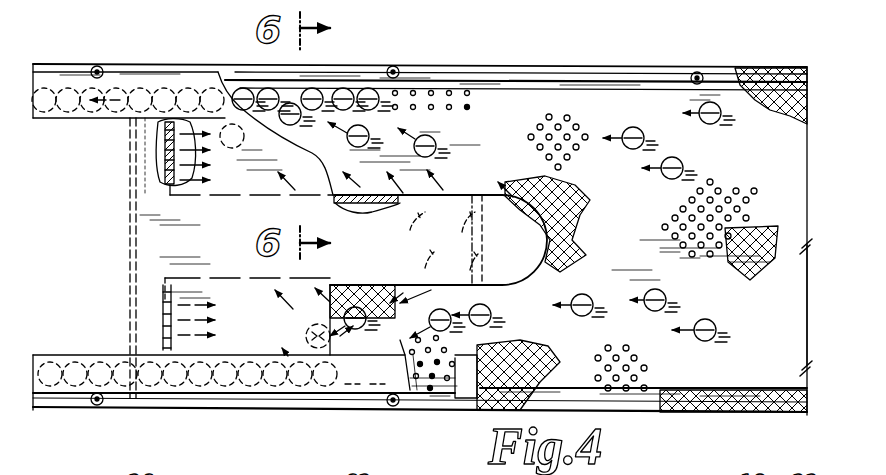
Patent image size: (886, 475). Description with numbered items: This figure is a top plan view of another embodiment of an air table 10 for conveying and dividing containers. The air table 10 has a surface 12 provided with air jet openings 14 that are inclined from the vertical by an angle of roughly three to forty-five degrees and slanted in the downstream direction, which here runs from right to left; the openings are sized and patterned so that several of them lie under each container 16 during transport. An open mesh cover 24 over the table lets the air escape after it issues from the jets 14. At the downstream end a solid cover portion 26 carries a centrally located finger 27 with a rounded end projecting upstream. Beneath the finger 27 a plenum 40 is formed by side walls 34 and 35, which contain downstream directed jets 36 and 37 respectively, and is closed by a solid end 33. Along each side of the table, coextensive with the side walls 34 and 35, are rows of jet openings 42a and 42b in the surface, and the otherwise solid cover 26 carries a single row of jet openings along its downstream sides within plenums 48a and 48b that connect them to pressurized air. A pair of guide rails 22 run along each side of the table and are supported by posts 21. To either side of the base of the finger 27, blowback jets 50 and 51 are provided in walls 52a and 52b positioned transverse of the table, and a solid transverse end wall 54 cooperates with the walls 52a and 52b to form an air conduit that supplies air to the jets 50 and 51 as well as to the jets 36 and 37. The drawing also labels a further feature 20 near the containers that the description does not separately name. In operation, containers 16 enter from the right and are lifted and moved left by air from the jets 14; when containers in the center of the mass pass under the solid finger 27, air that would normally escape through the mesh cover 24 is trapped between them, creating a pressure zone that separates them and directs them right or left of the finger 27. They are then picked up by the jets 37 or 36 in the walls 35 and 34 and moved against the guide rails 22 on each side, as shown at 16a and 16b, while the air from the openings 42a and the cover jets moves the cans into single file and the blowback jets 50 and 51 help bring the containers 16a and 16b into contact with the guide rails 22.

The air table 10 is at (665, 66).
The surface 12 is at (778, 334).
The air jet openings 14 is at (738, 186).
The container 16 is at (690, 142).
The container against first guide rail 16a is at (228, 148).
The container against second guide rail 16b is at (304, 334).
The coated granules 20 is at (368, 213).
The posts 21 is at (704, 78).
The guide rails 22 is at (547, 82).
The open mesh cover 24 is at (807, 100).
The solid cover portion 26 is at (150, 244).
The finger 27 is at (522, 282).
The solid end 33 is at (493, 195).
The side wall 34 is at (378, 206).
The side wall 35 is at (368, 280).
The downstream directed jets 36 is at (392, 195).
The downstream directed jets 37 is at (418, 281).
The plenum 40 is at (229, 251).
The row of jet openings 42a is at (467, 108).
The row of jet openings 42b is at (452, 384).
The plenum 48a is at (70, 118).
The plenum 48b is at (87, 355).
The blowback jets 50 is at (165, 166).
The blowback jets 51 is at (163, 307).
The wall 52a is at (165, 146).
The wall 52b is at (165, 330).
The solid transverse end wall 54 is at (133, 213).